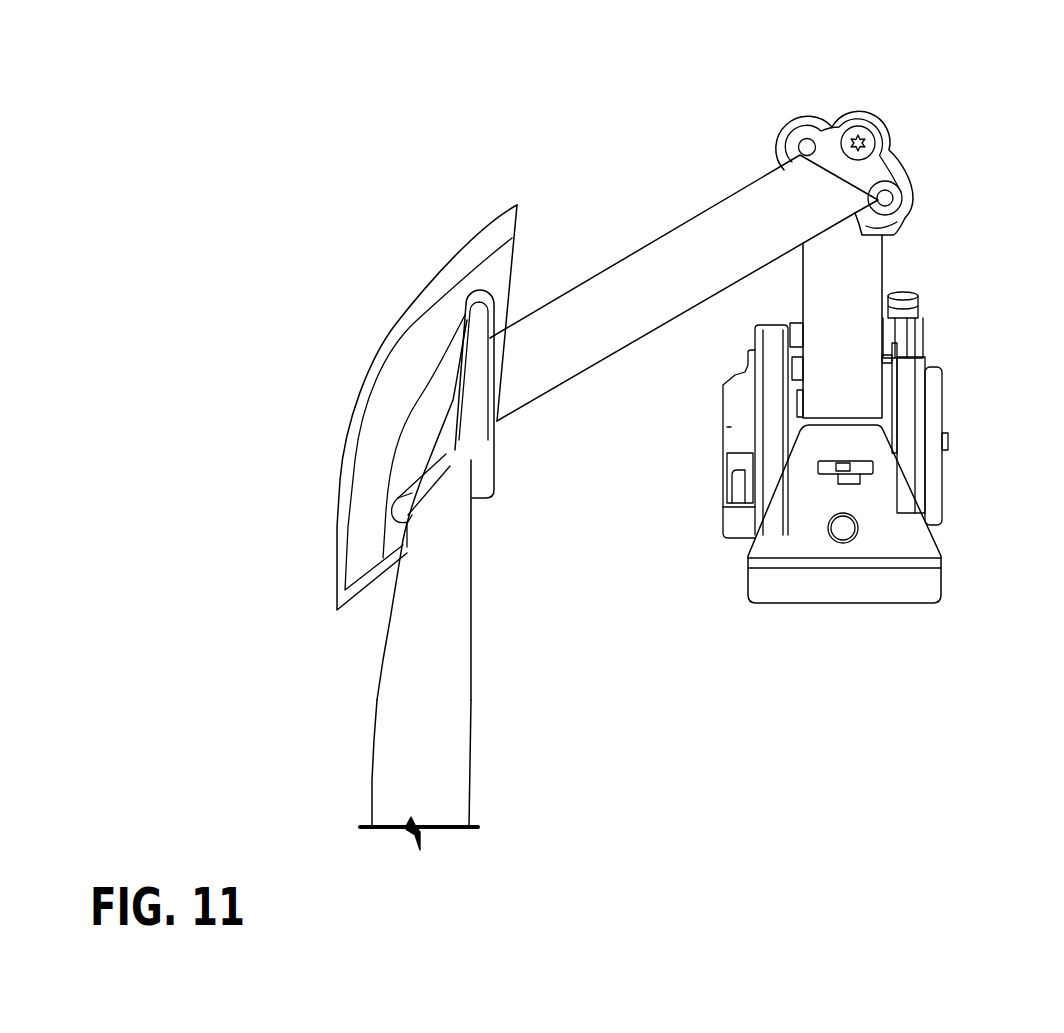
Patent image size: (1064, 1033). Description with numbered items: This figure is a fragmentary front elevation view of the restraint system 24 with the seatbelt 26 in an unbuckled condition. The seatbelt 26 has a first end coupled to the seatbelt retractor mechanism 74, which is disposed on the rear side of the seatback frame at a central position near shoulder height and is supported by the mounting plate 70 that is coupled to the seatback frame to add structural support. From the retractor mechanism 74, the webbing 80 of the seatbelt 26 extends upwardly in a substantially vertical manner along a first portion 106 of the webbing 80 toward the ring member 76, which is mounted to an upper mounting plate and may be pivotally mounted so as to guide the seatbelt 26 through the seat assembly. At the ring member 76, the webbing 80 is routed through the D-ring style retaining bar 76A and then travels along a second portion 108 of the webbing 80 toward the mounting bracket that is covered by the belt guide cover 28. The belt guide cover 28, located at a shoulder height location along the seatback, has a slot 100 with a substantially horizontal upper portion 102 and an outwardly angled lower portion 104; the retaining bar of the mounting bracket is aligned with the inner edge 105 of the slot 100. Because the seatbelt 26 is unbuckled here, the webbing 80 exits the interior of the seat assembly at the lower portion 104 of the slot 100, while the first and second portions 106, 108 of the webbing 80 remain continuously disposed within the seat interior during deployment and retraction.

The restraint system 24 is at (698, 203).
The seatbelt 26 is at (413, 642).
The belt guide cover 28 is at (330, 348).
The mounting plate 70 is at (953, 573).
The seatbelt retractor mechanism 74 is at (955, 458).
The ring member 76 is at (872, 102).
The D-ring style retaining bar 76A is at (900, 222).
The webbing 80 is at (413, 745).
The slot 100 is at (440, 452).
The upper portion of the slot 102 is at (478, 290).
The lower portion of the slot 104 is at (393, 507).
The inner edge of the slot 105 is at (453, 412).
The first portion of the webbing 106 is at (850, 300).
The second portion of the webbing 108 is at (626, 300).